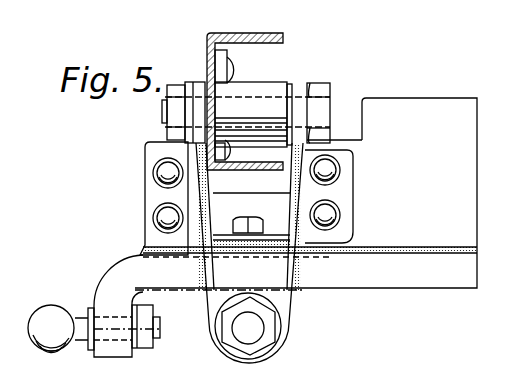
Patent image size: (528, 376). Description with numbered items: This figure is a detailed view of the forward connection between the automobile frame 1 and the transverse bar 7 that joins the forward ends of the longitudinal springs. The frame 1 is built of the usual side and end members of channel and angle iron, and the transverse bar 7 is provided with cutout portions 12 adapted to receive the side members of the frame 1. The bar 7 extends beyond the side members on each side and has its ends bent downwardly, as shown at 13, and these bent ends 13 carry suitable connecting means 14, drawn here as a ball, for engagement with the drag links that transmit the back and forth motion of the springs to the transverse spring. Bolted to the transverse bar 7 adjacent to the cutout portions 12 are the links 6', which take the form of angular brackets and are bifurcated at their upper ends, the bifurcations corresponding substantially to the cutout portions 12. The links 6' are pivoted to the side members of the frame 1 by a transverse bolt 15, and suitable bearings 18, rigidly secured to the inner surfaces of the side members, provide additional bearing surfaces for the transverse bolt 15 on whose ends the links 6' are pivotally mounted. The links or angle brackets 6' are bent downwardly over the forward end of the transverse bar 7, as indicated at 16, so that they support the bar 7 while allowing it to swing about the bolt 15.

The frame 1 is at (208, 52).
The links 6' is at (231, 207).
The transverse bar 7 is at (468, 214).
The cutout portions 12 is at (271, 178).
The downwardly bent ends 13 is at (133, 357).
The connecting means 14 is at (50, 315).
The transverse bolt 15 is at (165, 108).
The downwardly bent portion 16 is at (277, 305).
The bearings 18 is at (268, 82).